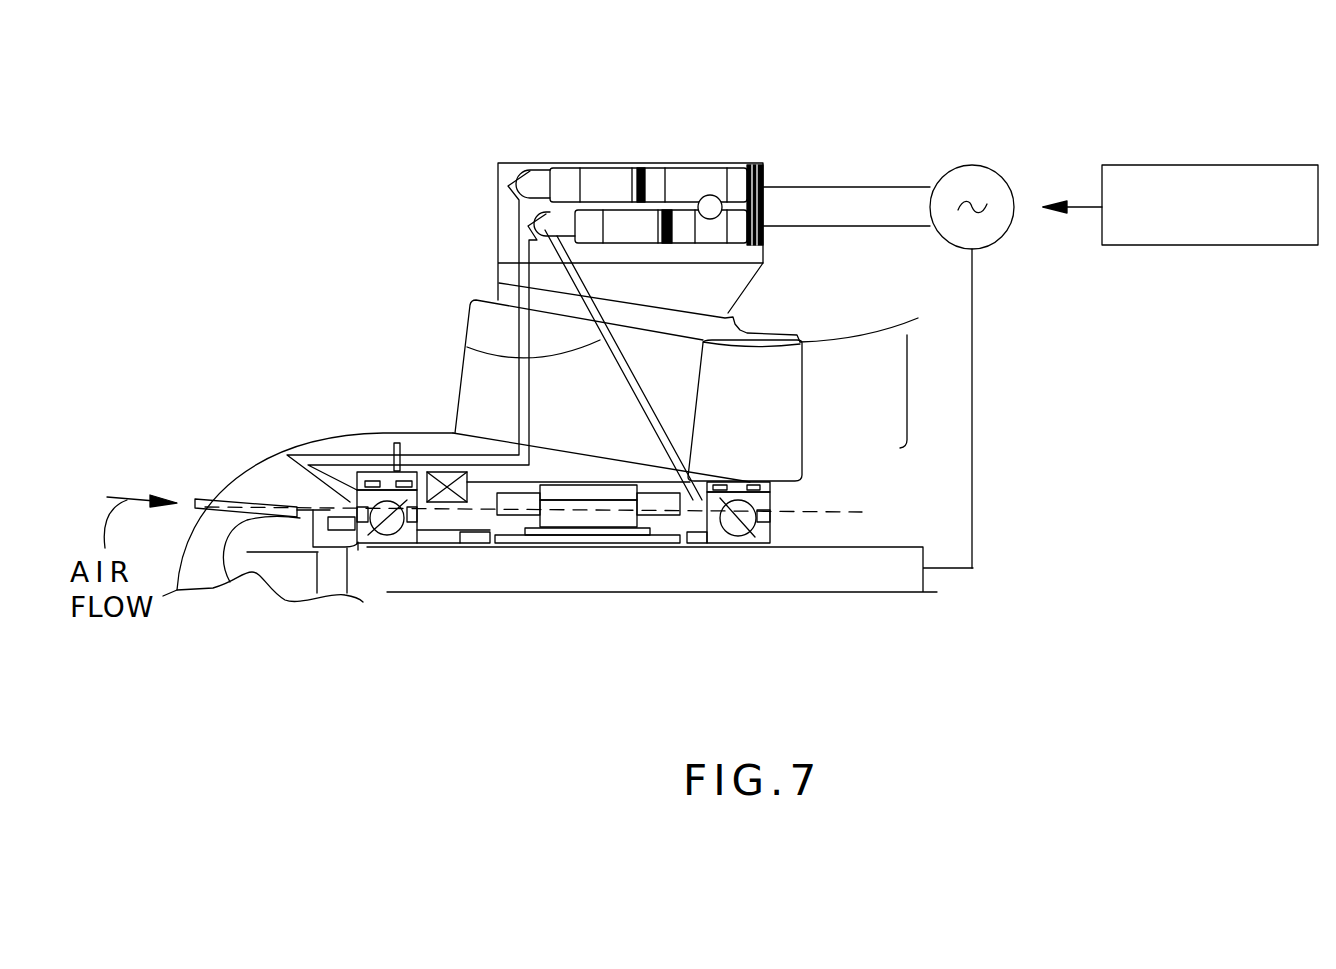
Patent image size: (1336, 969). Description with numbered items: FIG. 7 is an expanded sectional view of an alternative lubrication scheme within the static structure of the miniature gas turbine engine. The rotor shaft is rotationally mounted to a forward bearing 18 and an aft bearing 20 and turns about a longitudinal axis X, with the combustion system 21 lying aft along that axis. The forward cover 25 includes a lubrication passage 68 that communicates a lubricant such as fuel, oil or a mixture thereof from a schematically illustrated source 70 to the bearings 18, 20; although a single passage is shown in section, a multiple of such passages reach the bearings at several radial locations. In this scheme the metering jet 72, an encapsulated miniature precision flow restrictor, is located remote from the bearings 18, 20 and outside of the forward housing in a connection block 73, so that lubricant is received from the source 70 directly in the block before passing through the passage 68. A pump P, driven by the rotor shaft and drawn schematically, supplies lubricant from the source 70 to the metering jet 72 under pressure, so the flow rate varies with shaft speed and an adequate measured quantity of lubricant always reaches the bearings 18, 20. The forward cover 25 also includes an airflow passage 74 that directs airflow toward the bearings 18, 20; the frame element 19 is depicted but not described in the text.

The forward bearing 18 is at (413, 543).
The stator frame 19 is at (428, 430).
The aft bearing 20 is at (723, 543).
The combustion system 21 is at (905, 527).
The forward cover 25 is at (345, 430).
The lubrication passage 68 is at (517, 370).
The source 70 is at (1248, 245).
The metering jet 72 is at (620, 213).
The connection block 73 is at (523, 168).
The airflow passage 74 is at (242, 495).
The pump P is at (970, 165).
The longitudinal axis X is at (845, 593).